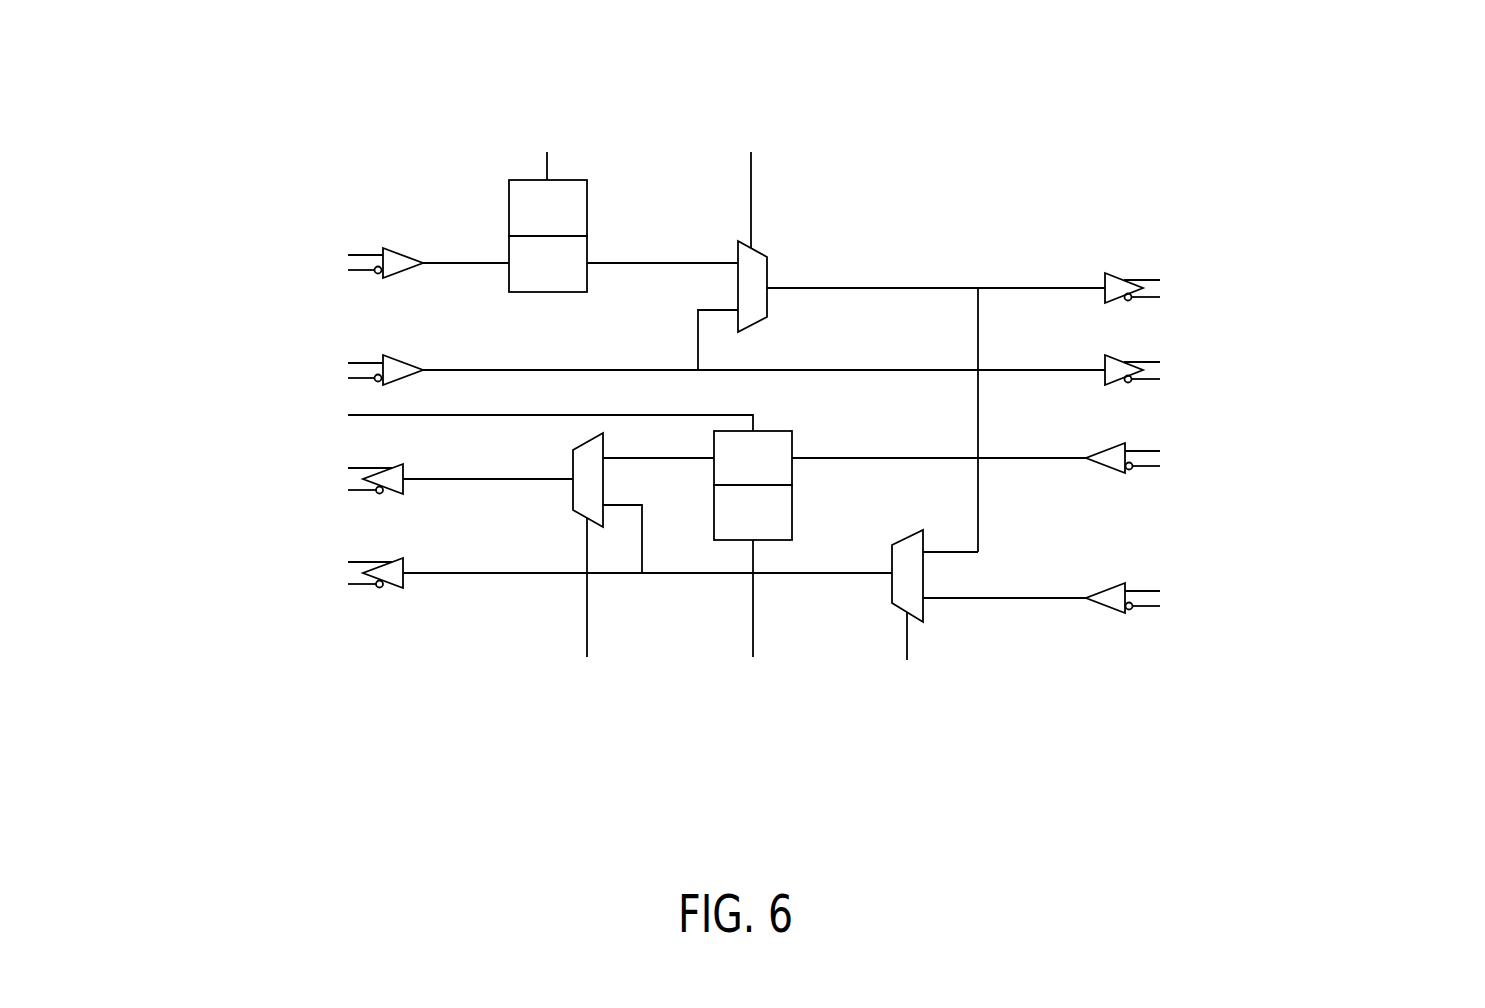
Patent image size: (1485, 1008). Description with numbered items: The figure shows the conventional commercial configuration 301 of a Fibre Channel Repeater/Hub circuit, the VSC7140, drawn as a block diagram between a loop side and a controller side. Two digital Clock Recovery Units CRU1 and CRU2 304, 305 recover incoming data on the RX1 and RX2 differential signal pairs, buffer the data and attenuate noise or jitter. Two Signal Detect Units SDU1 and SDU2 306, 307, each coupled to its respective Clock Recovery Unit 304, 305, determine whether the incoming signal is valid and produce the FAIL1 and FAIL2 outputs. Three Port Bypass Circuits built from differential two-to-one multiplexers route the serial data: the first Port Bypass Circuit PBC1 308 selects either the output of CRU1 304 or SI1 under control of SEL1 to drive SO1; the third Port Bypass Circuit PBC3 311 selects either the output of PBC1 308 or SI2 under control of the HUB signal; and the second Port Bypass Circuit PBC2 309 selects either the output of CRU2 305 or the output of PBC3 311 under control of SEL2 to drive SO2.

The conventional commercial configuration 301 is at (1110, 126).
The Clock Recovery Unit CRU1 304 is at (547, 283).
The Clock Recovery Unit CRU2 305 is at (790, 438).
The Signal Detect Unit SDU1 306 is at (587, 213).
The Signal Detect Unit SDU2 307 is at (792, 509).
The first Port Bypass Circuit PBC1 308 is at (767, 266).
The second Port Bypass Circuit PBC2 309 is at (602, 447).
The third Port Bypass Circuit PBC3 311 is at (913, 533).